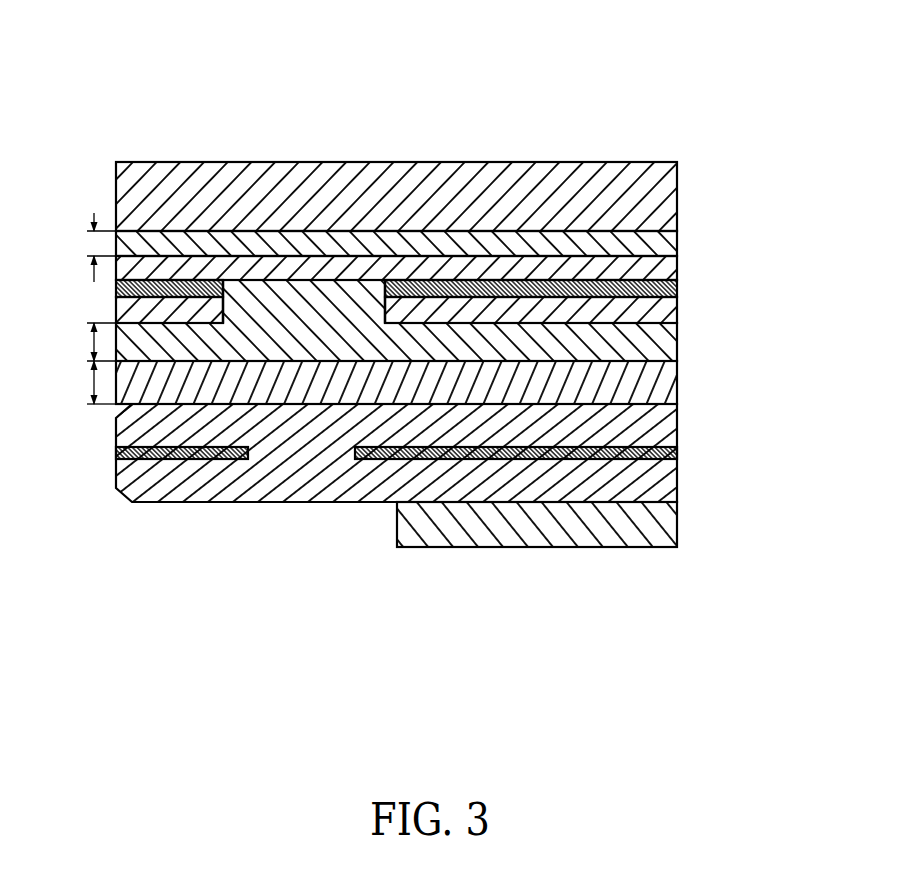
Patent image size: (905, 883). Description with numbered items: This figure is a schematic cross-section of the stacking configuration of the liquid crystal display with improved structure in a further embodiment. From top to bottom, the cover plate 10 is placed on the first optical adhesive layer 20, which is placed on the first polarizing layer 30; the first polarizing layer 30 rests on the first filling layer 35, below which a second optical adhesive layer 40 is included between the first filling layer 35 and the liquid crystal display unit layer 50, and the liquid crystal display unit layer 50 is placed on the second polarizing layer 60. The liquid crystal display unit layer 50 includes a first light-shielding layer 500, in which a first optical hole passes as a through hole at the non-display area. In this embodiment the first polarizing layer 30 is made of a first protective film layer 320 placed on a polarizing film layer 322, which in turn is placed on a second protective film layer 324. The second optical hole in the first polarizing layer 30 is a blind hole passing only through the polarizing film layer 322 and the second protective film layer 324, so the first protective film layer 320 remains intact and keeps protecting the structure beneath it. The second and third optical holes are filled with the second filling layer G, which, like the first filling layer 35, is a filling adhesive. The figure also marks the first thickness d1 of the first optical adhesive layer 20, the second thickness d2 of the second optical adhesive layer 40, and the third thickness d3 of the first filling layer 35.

The cover plate 10 is at (678, 176).
The first optical adhesive layer 20 is at (678, 235).
The first polarizing layer 30 is at (484, 289).
The first protective film layer 320 is at (678, 268).
The polarizing film layer 322 is at (678, 289).
The second protective film layer 324 is at (678, 313).
The second filling layer G is at (271, 310).
The first filling layer 35 is at (678, 350).
The second optical adhesive layer 40 is at (678, 386).
The liquid crystal display unit layer 50 is at (678, 486).
The first light-shielding layer 500 is at (678, 453).
The second polarizing layer 60 is at (678, 526).
The first thickness d1 is at (82, 247).
The second thickness d2 is at (82, 382).
The third thickness d3 is at (82, 342).